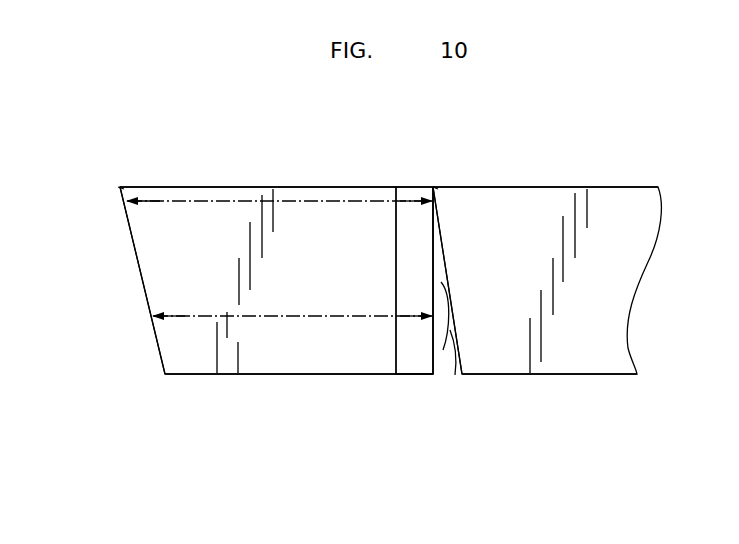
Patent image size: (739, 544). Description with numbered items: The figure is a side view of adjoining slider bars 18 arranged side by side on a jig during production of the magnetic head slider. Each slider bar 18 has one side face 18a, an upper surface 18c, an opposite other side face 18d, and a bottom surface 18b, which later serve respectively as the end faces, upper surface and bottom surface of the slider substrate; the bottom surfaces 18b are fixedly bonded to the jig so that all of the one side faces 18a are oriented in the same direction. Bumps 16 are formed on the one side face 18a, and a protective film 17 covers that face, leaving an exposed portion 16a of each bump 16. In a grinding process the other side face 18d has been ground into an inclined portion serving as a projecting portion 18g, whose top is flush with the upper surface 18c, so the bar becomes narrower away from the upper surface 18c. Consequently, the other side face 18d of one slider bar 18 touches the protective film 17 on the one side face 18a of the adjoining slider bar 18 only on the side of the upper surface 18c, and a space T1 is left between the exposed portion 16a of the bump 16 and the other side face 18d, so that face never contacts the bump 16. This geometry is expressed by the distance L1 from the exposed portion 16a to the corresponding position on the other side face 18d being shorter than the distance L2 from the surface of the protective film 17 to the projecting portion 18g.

The slider bar 18 is at (137, 176).
The one side face 18a is at (397, 343).
The bottom surface 18b is at (238, 376).
The upper surface 18c is at (239, 185).
The other side face 18d is at (158, 349).
The projecting portion 18g is at (112, 186).
The protective film 17 is at (405, 186).
The bump 16 is at (431, 331).
The exposed portion 16a is at (443, 350).
The space T1 is at (455, 375).
The distance L1 is at (210, 316).
The distance L2 is at (189, 202).